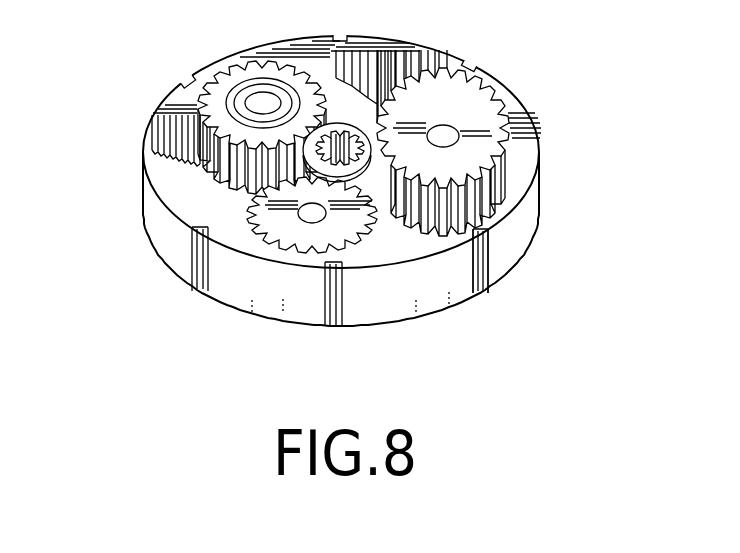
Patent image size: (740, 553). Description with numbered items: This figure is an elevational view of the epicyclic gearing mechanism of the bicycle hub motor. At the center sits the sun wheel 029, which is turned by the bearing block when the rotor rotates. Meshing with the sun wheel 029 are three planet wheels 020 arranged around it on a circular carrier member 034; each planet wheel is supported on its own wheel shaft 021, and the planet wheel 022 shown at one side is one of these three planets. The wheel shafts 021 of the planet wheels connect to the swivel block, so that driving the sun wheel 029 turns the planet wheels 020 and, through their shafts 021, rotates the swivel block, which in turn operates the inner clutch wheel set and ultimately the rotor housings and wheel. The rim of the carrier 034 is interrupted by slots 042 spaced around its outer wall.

The planet wheels 020 is at (467, 123).
The wheel shafts 021 is at (310, 218).
The planet gear with hub 022 is at (238, 100).
The sun wheel 029 is at (383, 172).
The planet carrier plate 034 is at (420, 44).
The slot in carrier rim 042 is at (484, 262).